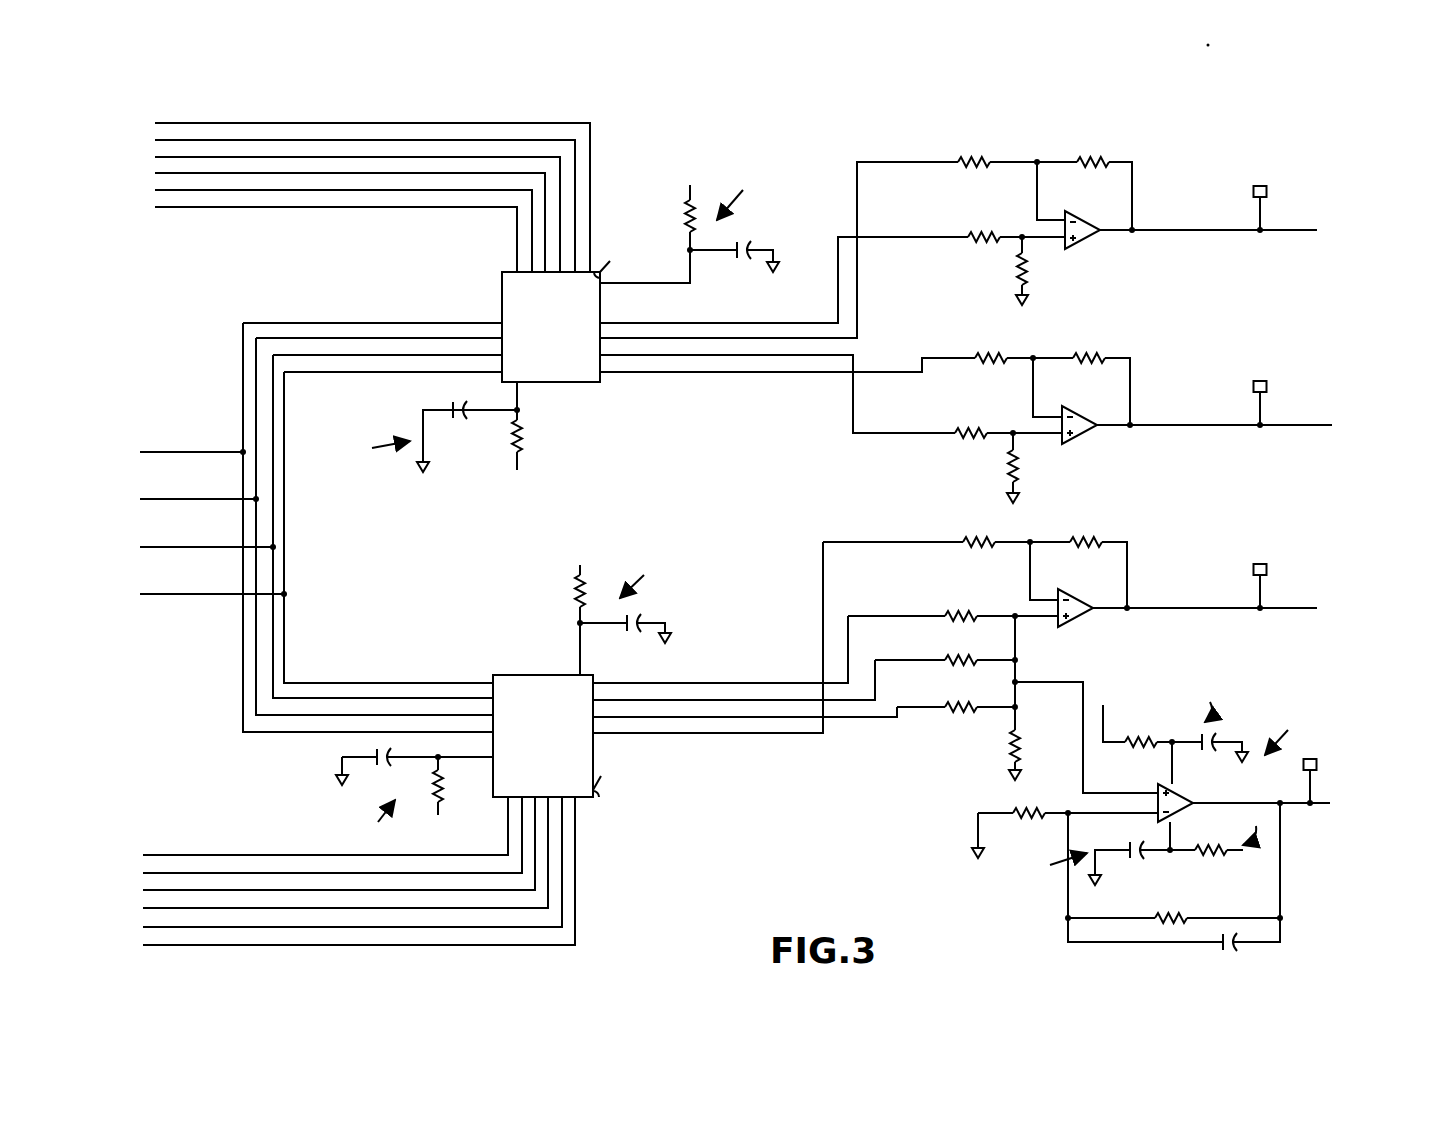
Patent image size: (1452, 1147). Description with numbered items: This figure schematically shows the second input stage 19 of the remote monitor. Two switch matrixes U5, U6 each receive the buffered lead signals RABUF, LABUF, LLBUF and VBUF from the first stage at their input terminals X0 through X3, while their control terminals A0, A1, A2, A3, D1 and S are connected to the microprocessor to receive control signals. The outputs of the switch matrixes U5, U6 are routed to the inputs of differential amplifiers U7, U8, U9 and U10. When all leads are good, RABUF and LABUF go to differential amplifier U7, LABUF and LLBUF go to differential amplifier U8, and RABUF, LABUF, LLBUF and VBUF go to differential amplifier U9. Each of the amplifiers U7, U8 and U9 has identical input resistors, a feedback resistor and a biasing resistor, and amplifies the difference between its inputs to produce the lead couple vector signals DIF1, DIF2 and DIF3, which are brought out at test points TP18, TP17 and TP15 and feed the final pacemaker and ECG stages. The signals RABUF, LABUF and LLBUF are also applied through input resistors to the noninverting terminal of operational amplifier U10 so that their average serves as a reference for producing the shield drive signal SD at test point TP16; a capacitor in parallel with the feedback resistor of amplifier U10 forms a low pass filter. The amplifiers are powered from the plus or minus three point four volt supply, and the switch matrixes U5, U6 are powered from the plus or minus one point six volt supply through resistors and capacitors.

The second input stage 19 is at (769, 498).
The switch matrix U5 is at (565, 382).
The switch matrix U6 is at (535, 675).
The differential amplifier U7 is at (1085, 243).
The differential amplifier U8 is at (1082, 438).
The differential amplifier U9 is at (1078, 621).
The operational amplifier U10 is at (1182, 796).
The test point TP15 is at (1263, 575).
The test point TP16 is at (1313, 771).
The test point TP17 is at (1263, 392).
The test point TP18 is at (1263, 198).